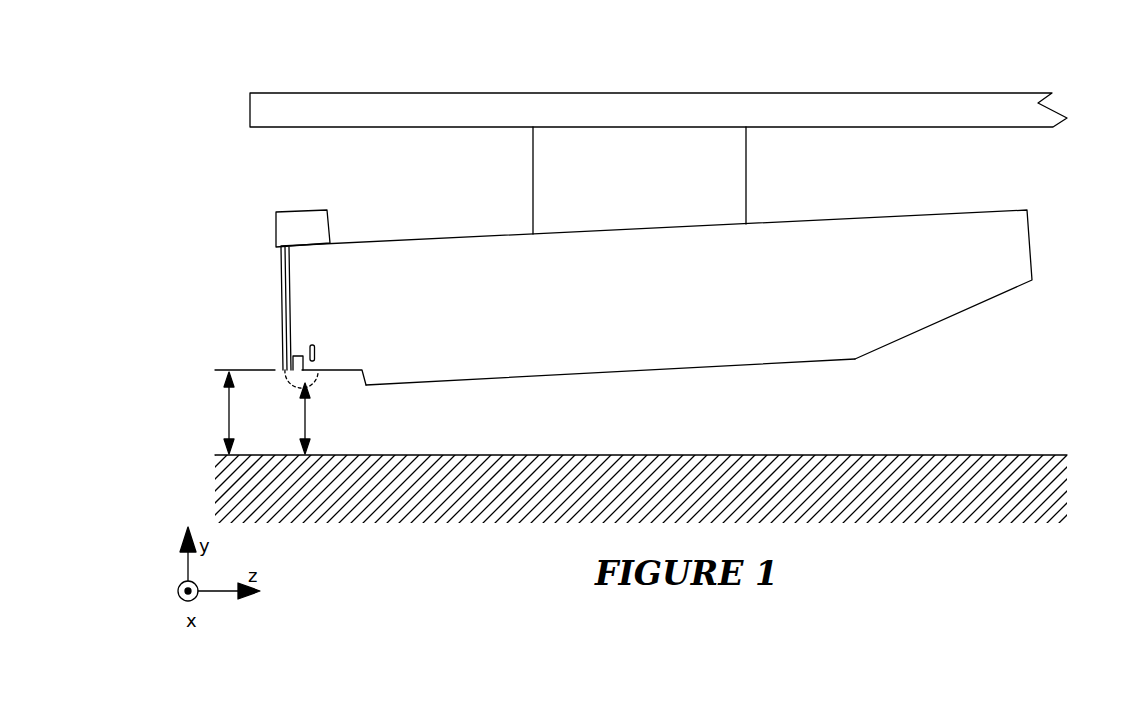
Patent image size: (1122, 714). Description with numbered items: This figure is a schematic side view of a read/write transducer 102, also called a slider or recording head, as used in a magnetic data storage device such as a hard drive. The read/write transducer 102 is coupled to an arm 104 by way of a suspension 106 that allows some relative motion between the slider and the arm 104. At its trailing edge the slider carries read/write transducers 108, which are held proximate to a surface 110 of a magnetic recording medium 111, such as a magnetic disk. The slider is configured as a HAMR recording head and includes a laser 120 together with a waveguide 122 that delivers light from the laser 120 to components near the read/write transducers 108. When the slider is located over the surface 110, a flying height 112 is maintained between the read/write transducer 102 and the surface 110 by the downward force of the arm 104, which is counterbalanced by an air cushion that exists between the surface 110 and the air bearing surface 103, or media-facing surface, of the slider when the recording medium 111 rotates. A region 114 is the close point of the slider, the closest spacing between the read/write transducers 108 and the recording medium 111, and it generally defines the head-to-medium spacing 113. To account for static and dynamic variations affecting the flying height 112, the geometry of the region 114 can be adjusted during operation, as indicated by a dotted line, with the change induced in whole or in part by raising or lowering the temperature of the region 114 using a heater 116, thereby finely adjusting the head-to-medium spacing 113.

The read/write transducer 102 is at (902, 223).
The air bearing surface 103 is at (483, 383).
The arm 104 is at (963, 102).
The suspension 106 is at (747, 168).
The read/write transducers 108 is at (297, 357).
The surface 110 is at (907, 455).
The magnetic recording medium 111 is at (925, 510).
The flying height 112 is at (226, 412).
The head-to-medium spacing 113 is at (284, 418).
The region 114 is at (308, 386).
The heater 116 is at (310, 343).
The laser 120 is at (300, 220).
The waveguide 122 is at (282, 277).